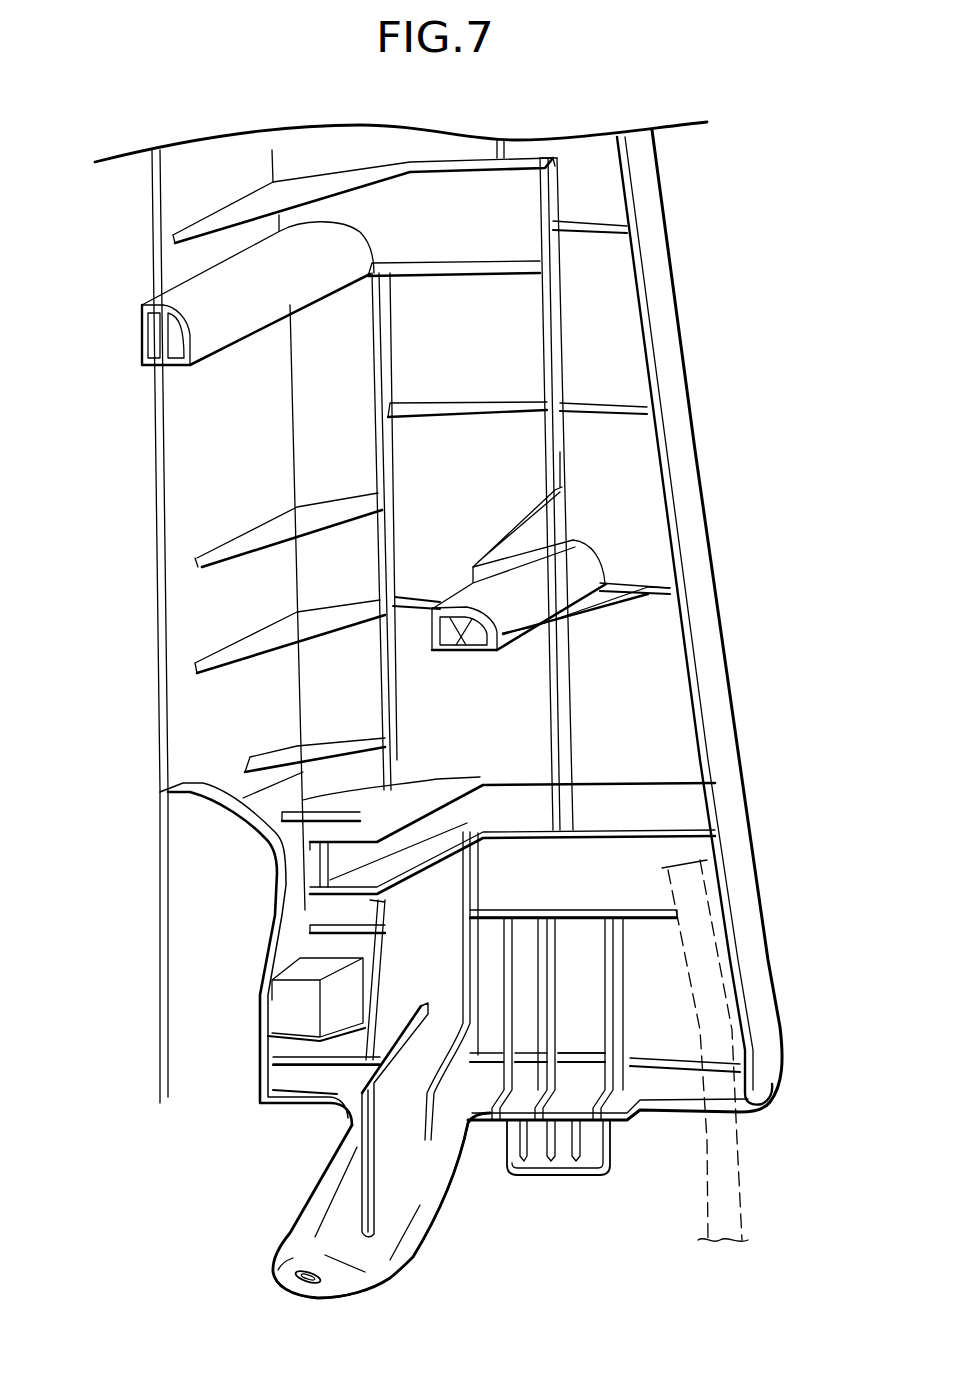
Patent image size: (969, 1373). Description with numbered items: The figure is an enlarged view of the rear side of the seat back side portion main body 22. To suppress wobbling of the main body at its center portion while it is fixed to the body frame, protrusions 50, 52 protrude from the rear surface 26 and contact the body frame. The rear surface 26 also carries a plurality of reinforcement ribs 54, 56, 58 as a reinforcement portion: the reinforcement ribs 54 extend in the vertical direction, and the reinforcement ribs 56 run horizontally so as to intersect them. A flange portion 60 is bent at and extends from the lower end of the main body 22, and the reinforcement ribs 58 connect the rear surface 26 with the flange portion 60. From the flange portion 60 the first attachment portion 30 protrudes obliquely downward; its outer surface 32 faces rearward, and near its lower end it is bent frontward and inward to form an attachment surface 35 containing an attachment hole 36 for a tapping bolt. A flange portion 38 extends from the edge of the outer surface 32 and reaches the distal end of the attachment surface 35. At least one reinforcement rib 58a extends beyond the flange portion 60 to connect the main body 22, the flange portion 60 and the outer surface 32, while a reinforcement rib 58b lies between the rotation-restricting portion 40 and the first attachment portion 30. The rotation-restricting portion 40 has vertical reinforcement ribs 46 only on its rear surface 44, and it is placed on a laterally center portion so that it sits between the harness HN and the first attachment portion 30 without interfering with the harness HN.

The seat back side portion main body 22 is at (347, 155).
The rear surface 26 is at (603, 327).
The first attachment portion 30 is at (422, 1263).
The outer surface 32 is at (402, 1203).
The attachment surface 35 is at (347, 1277).
The attachment hole 36 is at (290, 1279).
The flange portion 38 is at (332, 1182).
The rotation-restricting portion 40 is at (617, 1152).
The rear surface 44 is at (605, 1138).
The reinforcement ribs 46 is at (556, 1162).
The protrusion 50 is at (205, 290).
The protrusion 52 is at (540, 592).
The reinforcement ribs 54 is at (393, 463).
The reinforcement ribs 56 is at (527, 780).
The reinforcement ribs 58 is at (560, 968).
The reinforcement rib 58a is at (422, 1090).
The reinforcement rib 58b is at (560, 1100).
The flange portion 60 is at (583, 1107).
The harness HN is at (728, 1190).